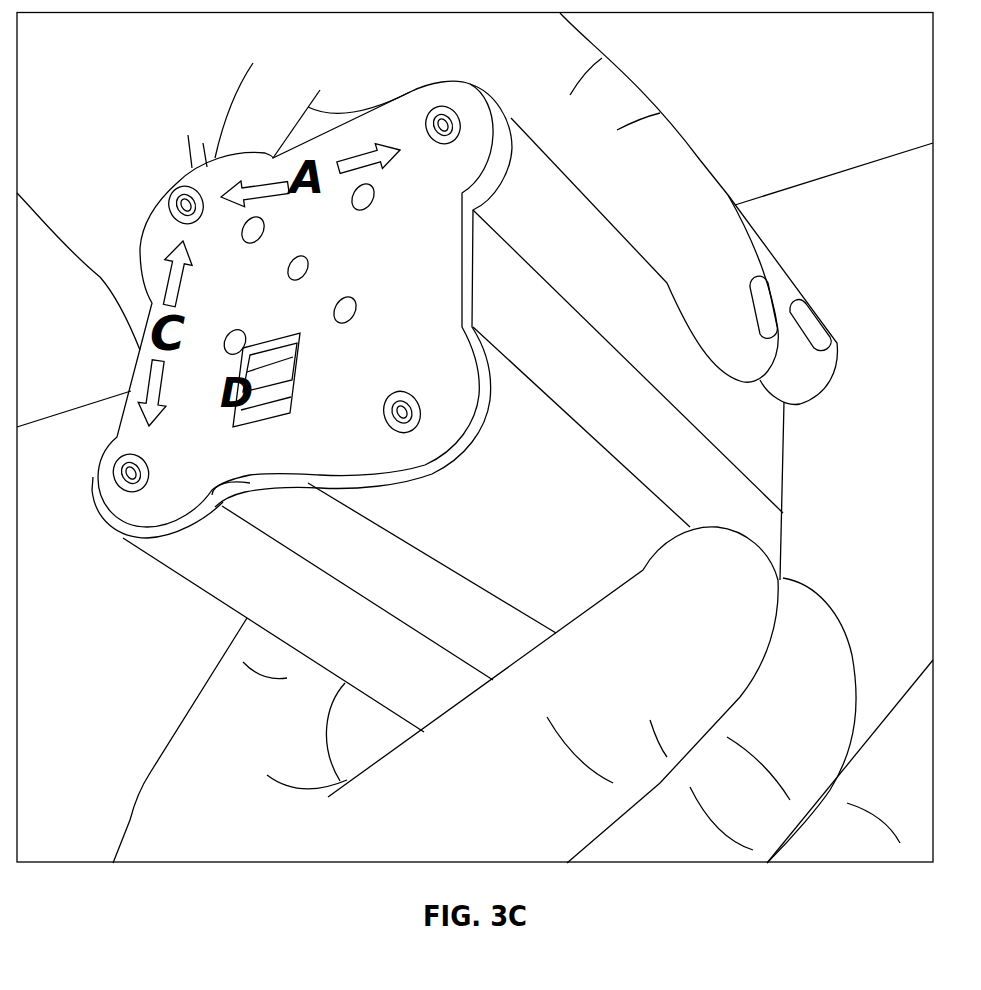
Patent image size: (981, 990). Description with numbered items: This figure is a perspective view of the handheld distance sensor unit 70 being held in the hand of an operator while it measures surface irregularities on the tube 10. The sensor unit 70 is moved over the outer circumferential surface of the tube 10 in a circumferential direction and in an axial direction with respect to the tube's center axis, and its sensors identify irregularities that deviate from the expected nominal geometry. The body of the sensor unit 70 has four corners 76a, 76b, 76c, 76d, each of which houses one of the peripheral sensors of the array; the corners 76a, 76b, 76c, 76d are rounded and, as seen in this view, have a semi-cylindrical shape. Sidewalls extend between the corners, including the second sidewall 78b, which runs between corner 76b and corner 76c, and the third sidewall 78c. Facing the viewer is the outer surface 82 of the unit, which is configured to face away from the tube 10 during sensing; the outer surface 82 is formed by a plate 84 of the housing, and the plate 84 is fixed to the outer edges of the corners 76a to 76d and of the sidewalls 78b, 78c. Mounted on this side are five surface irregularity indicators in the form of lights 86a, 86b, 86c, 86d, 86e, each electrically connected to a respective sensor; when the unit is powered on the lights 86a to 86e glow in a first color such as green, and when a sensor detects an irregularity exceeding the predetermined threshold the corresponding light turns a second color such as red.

The tube 10 is at (93, 635).
The distance sensor unit 70 is at (613, 213).
The corner 76a is at (150, 183).
The corner 76b is at (185, 548).
The corner 76c is at (577, 573).
The corner 76d is at (523, 117).
The second sidewall 78b is at (288, 445).
The third sidewall 78c is at (553, 310).
The outer surface 82 is at (363, 378).
The plate 84 is at (245, 486).
The light 86a is at (308, 258).
The light 86b is at (241, 233).
The light 86c is at (223, 352).
The light 86d is at (375, 191).
The light 86e is at (357, 302).